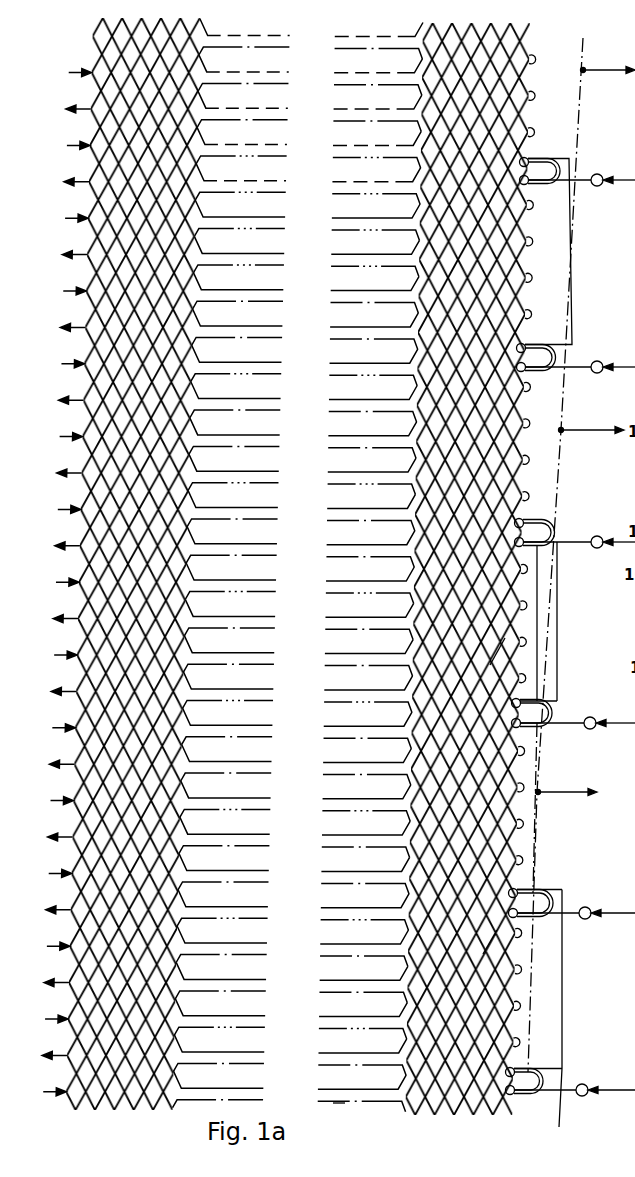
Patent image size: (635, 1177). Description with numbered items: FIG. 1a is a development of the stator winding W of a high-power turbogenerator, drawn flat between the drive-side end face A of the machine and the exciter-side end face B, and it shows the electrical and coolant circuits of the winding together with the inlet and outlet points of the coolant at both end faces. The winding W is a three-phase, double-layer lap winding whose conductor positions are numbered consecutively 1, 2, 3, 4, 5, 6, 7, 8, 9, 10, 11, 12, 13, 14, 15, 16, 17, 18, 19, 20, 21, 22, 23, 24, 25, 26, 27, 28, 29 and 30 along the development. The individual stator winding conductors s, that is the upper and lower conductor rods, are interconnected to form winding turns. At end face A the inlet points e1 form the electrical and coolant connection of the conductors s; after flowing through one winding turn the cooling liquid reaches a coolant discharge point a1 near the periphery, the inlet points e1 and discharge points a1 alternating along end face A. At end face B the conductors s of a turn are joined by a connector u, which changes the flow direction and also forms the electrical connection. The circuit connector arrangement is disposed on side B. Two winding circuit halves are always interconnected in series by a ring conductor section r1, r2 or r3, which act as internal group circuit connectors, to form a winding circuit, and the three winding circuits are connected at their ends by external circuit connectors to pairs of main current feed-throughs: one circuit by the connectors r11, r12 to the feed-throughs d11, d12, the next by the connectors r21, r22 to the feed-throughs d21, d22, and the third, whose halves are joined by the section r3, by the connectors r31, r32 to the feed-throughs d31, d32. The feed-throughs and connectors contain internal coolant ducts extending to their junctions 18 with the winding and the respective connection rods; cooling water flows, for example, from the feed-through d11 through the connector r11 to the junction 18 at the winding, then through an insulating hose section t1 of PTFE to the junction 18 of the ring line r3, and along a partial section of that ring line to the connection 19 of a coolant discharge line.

The pump 1 is at (290, 1091).
The heat exchanger 2 is at (289, 1055).
The fine filter 3 is at (290, 1019).
The filter bed 4 is at (291, 982).
The collecting tank 5 is at (292, 946).
The contour line 6 is at (293, 910).
The ring-shaped manifold arrangement 7 is at (294, 873).
The ring-shaped discharge manifold 8 is at (294, 837).
The ground potential indication 9 is at (295, 801).
The thread row 10 is at (296, 765).
The thread row 11 is at (297, 728).
The thread row 12 is at (298, 692).
The thread row 13 is at (298, 656).
The thread row 14 is at (298, 619).
The thread row 15 is at (299, 583).
The thread row 16 is at (300, 547).
The thread row 17 is at (301, 510).
The junction 18 is at (534, 508).
The connection 19 is at (406, 611).
The thread row 20 is at (303, 402).
The thread row 21 is at (304, 365).
The thread row 22 is at (305, 329).
The thread row 23 is at (306, 293).
The thread row 24 is at (306, 256).
The thread row 25 is at (307, 220).
The thread row 26 is at (307, 184).
The thread row 27 is at (308, 147).
The thread row 28 is at (309, 111).
The thread row 29 is at (310, 75).
The thread row 30 is at (311, 39).
The stator winding W is at (376, 29).
The end face of the machine (drive side) A is at (63, 1125).
The end face of the machine (exciter side) B is at (458, 1132).
The coolant discharge point a1 is at (46, 1018).
The inlet point e1 is at (46, 1055).
The stator winding conductor s is at (333, 1103).
The connector u is at (521, 973).
The insulating hose section t1 is at (536, 891).
The main current feed-through d21 is at (597, 174).
The circuit connector r21 is at (530, 184).
The ring conductor section r3 is at (572, 280).
The main current feed-through d12 is at (597, 361).
The circuit connector r12 is at (527, 371).
The main current feed-through d31 is at (597, 536).
The circuit connector r31 is at (525, 546).
The ring conductor section r1 is at (553, 606).
The main current feed-through d22 is at (590, 717).
The circuit connector r22 is at (522, 727).
The ring conductor section r2 is at (538, 829).
The main current feed-through d11 is at (585, 907).
The circuit connector r11 is at (520, 917).
The main current feed-through d32 is at (582, 1084).
The circuit connector r32 is at (517, 1094).